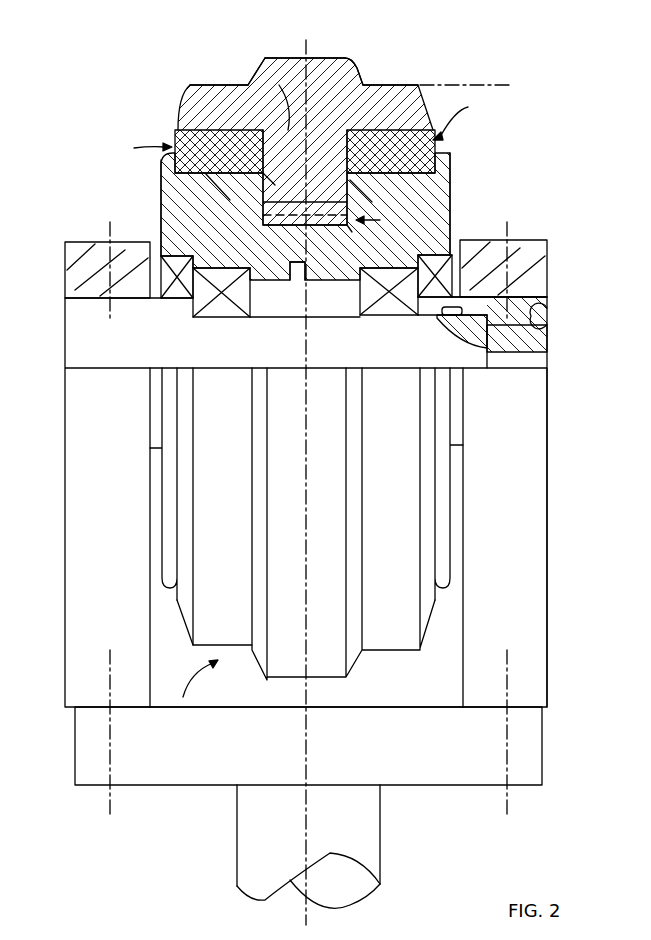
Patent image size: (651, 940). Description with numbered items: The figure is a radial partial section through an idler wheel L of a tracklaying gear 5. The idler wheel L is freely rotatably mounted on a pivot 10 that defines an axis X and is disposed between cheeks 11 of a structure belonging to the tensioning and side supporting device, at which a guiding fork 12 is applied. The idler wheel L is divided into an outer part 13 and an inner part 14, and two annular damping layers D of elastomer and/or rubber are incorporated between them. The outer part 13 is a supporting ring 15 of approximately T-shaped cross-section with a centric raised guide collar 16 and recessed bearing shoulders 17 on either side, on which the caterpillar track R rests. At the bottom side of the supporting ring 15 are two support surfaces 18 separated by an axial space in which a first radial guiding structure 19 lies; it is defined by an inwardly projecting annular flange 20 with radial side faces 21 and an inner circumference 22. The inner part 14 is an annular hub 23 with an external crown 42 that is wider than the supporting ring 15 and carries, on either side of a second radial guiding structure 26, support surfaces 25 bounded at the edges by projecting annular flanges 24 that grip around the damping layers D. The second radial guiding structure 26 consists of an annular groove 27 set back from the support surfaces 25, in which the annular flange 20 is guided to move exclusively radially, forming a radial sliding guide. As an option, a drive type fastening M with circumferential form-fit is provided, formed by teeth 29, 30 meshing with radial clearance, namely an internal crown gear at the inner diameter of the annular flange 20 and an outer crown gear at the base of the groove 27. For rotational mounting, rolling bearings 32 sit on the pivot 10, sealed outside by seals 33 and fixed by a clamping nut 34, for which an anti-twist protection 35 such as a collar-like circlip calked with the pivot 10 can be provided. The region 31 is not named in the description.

The tracklaying gear 5 is at (64, 677).
The pivot 10 is at (400, 370).
The cheeks 11 is at (145, 405).
The guiding fork 12 is at (75, 242).
The outer part 13 is at (372, 78).
The inner part 14 is at (454, 229).
The supporting ring 15 is at (427, 84).
The guide collar 16 is at (318, 57).
The bearing shoulders 17 is at (197, 83).
The support surfaces 18 is at (180, 128).
The first radial guiding structure 19 is at (372, 84).
The annular flange 20 is at (263, 57).
The radial side faces 21 is at (272, 132).
The inner circumference 22 is at (318, 130).
The annular hub 23 is at (451, 180).
The annular flanges 24 is at (436, 153).
The support surfaces 25 is at (223, 188).
The second radial guiding structure 26 is at (355, 197).
The annular groove 27 is at (262, 252).
The teeth 29 is at (272, 179).
The teeth 30 is at (290, 228).
The gap 31 is at (333, 290).
The rolling bearings 32 is at (230, 318).
The seals 33 is at (170, 300).
The clamping nut 34 is at (548, 316).
The anti-twist protection 35 is at (548, 340).
The external crown 42 is at (161, 215).
The damping layers D is at (301, 127).
The idler wheel L is at (552, 630).
The drive type fastening M is at (378, 219).
The caterpillar track R is at (479, 84).
The axis X is at (489, 370).